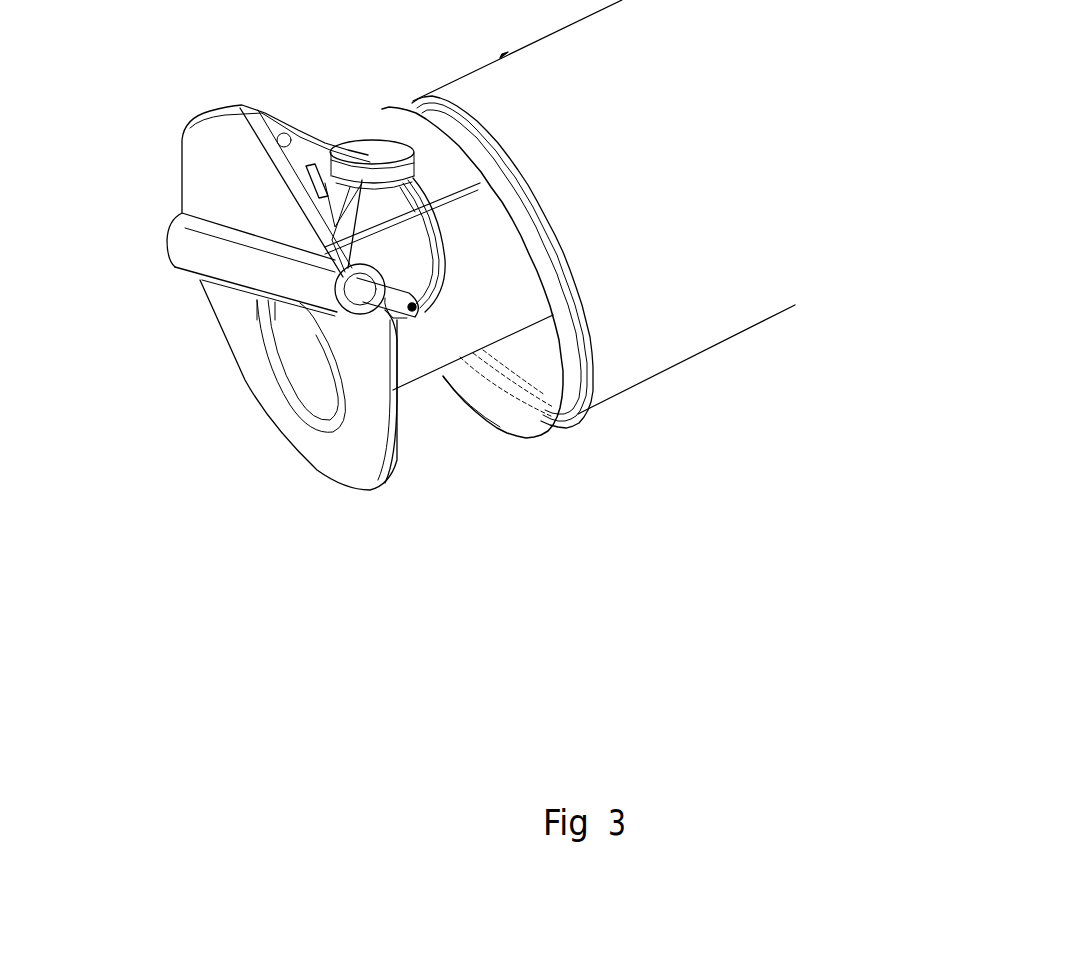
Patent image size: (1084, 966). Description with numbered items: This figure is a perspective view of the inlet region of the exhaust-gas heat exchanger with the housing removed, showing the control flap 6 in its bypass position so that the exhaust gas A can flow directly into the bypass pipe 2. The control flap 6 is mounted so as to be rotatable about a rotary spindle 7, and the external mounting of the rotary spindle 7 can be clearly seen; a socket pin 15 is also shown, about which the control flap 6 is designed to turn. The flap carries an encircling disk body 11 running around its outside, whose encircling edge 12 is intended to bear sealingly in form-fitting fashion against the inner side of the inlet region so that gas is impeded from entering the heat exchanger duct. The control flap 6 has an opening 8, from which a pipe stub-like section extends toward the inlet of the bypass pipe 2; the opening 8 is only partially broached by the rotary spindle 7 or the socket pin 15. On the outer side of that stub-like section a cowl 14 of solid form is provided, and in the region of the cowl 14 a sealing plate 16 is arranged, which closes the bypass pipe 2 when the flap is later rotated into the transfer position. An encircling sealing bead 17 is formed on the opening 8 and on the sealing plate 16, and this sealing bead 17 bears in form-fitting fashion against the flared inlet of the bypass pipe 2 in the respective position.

The bypass pipe 2 is at (473, 340).
The control flap 6 is at (166, 172).
The rotary spindle 7 is at (412, 307).
The opening 8 is at (301, 339).
The disk body 11 is at (351, 484).
The encircling edge 12 is at (398, 486).
The cowl 14 is at (332, 197).
The socket pin 15 is at (360, 300).
The sealing plate 16 is at (365, 141).
The sealing bead 17 is at (388, 164).
The exhaust gas A is at (306, 392).